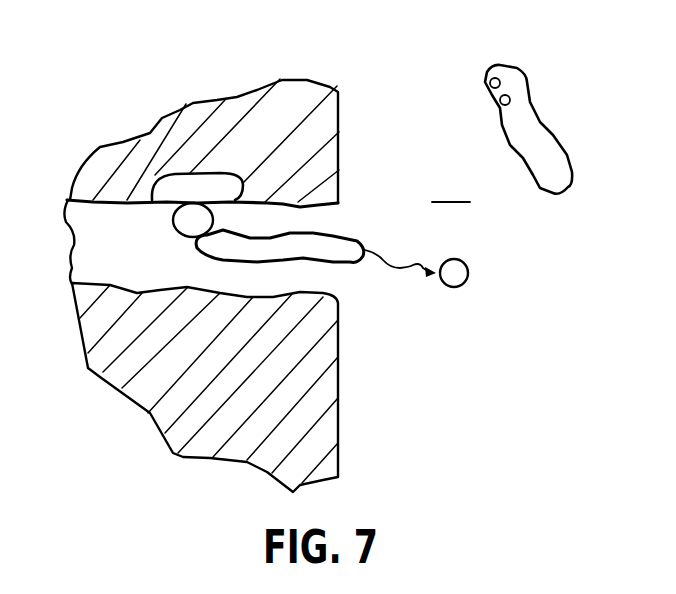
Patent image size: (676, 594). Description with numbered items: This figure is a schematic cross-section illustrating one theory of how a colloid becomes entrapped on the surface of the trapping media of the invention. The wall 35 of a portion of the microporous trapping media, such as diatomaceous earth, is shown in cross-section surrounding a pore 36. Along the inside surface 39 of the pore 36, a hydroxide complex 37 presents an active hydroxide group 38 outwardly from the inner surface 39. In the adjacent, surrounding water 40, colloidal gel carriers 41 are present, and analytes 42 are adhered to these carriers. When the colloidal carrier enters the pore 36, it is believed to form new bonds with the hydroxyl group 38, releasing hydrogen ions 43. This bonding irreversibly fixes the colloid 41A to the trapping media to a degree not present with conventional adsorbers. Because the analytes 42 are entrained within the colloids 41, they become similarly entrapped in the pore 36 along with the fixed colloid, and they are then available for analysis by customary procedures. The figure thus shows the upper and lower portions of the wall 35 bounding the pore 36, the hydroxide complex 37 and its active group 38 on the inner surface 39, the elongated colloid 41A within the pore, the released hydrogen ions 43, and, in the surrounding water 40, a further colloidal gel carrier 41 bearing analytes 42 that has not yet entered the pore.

The wall 35 is at (280, 100).
The pore 36 is at (317, 275).
The hydroxide complex 37 is at (168, 182).
The hydroxide group 38 is at (183, 228).
The inside surface 39 is at (129, 205).
The water 40 is at (451, 189).
The colloidal gel carrier 41 is at (550, 122).
The colloid 41A is at (325, 233).
The analytes 42 is at (495, 77).
The hydrogen ions 43 is at (467, 278).